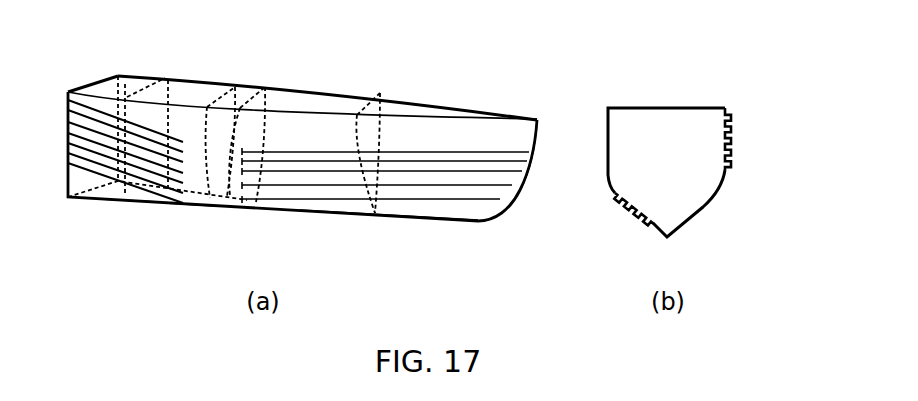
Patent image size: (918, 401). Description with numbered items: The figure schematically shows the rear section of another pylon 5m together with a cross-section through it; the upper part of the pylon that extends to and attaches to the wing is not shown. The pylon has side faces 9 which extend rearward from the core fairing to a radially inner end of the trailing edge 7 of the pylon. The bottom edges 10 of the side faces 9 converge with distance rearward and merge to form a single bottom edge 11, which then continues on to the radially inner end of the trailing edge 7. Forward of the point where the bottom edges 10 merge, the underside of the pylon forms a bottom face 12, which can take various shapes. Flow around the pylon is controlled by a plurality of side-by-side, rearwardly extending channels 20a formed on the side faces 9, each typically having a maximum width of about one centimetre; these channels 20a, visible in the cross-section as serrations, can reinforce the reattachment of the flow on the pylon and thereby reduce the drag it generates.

The pylon 5m is at (443, 67).
The trailing edge of the pylon 7 is at (523, 178).
The side faces 9 is at (465, 133).
The bottom edges 10 is at (187, 207).
The single bottom edge 11 is at (390, 221).
The bottom face 12 is at (150, 203).
The channels 20a is at (120, 118).